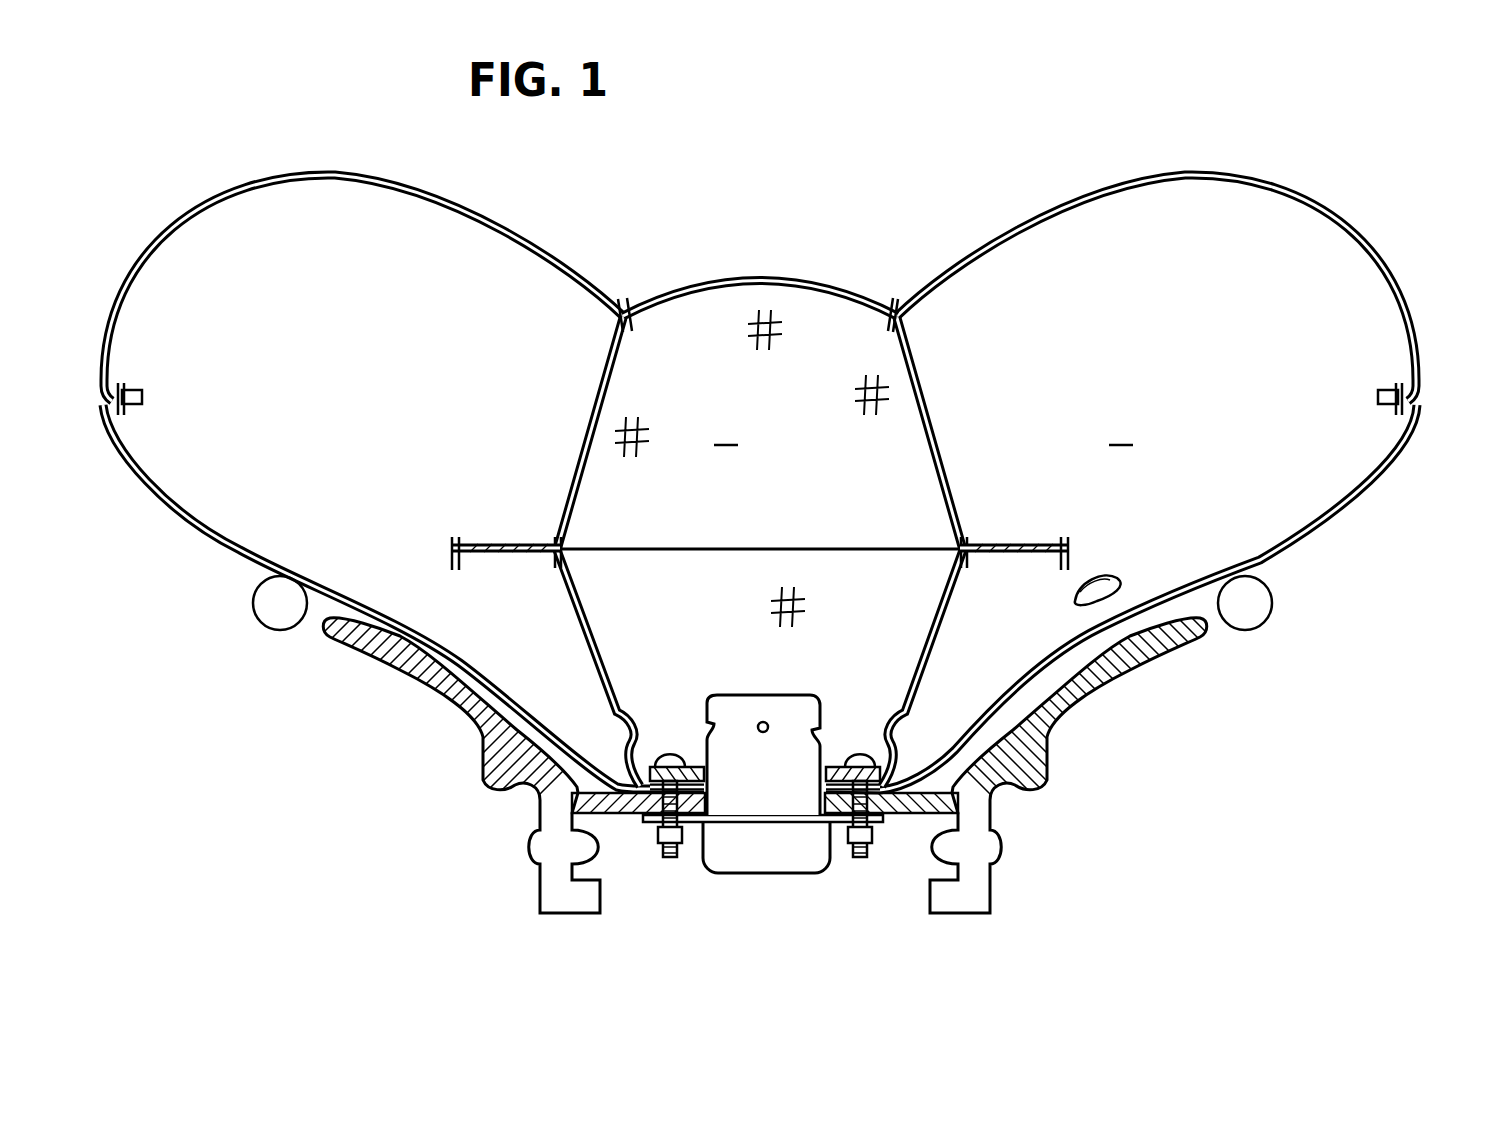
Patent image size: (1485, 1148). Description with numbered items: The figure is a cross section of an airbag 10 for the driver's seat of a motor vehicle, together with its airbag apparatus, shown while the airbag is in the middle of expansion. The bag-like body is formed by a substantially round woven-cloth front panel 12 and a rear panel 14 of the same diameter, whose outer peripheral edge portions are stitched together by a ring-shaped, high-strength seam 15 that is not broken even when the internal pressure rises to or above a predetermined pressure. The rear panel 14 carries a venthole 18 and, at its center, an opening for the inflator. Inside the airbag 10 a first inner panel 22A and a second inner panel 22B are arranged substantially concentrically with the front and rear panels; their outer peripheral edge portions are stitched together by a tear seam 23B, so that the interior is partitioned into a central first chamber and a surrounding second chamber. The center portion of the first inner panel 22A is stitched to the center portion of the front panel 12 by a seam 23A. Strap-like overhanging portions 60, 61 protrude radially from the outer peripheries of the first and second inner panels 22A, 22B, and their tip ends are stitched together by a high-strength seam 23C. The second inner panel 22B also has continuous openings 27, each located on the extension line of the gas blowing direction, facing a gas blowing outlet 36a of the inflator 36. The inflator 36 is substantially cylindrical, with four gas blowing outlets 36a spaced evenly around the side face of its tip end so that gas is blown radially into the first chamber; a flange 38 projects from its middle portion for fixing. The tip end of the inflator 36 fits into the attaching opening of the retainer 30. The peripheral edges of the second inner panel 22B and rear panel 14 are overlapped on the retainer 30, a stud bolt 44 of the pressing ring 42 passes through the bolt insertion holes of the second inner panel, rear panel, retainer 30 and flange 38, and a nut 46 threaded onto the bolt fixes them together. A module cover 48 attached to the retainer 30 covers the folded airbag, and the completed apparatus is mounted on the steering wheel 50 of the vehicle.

The airbag 10 is at (1250, 158).
The front panel 12 is at (1385, 258).
The rear panel 14 is at (1348, 520).
The seam 15 is at (1390, 388).
The venthole 18 is at (1103, 578).
The first inner panel 22A is at (596, 398).
The second inner panel 22B is at (588, 611).
The seam 23A is at (895, 300).
The tear seam 23B is at (966, 540).
The seam 23C is at (1066, 537).
The continuous opening 27 is at (900, 718).
The retainer 30 is at (985, 807).
The inflator 36 is at (776, 858).
The gas blowing outlet 36a is at (703, 715).
The flange 38 is at (722, 825).
The pressing ring 42 is at (836, 765).
The stud bolt 44 is at (860, 858).
The nut 46 is at (878, 845).
The module cover 48 is at (1113, 665).
The steering wheel 50 is at (290, 632).
The overhanging portion 60 is at (1020, 540).
The overhanging portion 61 is at (1010, 558).